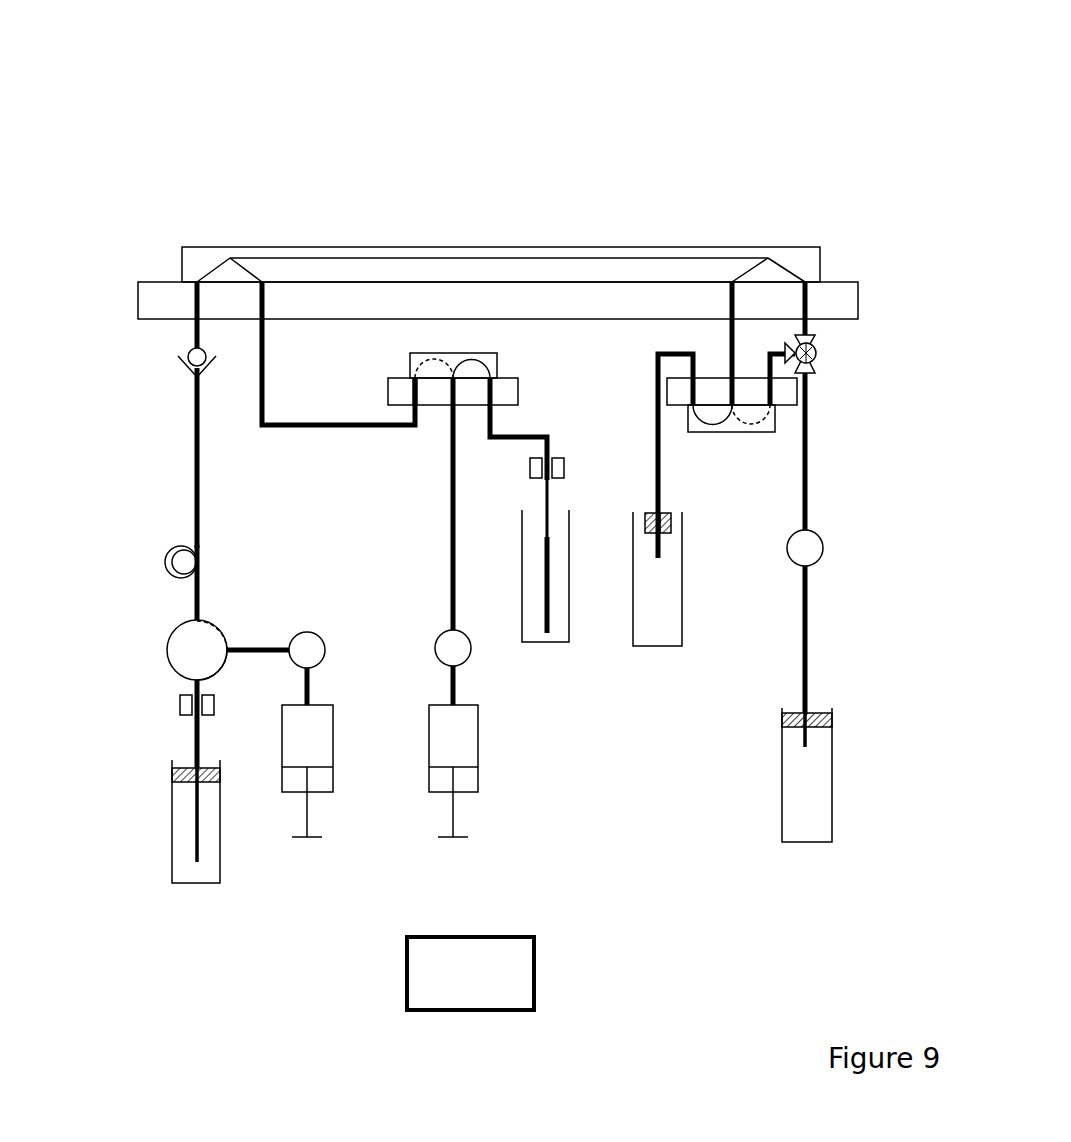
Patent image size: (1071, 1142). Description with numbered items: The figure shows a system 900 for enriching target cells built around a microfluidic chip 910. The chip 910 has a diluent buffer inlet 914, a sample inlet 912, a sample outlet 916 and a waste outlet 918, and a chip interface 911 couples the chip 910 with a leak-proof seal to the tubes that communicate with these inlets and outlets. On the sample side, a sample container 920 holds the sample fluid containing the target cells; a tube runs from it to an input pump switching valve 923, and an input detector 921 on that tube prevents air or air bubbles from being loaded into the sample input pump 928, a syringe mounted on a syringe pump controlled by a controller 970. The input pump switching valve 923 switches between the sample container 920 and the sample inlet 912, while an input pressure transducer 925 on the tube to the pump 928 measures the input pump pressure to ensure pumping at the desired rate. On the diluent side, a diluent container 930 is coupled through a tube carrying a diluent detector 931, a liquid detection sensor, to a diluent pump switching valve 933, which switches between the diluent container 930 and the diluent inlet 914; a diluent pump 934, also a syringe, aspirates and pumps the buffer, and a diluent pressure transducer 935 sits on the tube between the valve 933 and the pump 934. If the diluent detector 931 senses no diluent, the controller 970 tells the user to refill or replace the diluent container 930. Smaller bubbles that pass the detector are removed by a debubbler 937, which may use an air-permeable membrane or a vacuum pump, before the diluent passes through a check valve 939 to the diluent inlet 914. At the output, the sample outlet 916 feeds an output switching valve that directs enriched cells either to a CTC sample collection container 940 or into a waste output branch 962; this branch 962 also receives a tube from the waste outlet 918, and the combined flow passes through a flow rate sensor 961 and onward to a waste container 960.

The system 900 is at (284, 100).
The microfluidic chip 910 is at (538, 247).
The chip interface 911 is at (157, 298).
The sample inlet 912 is at (262, 282).
The diluent buffer inlet 914 is at (197, 282).
The sample outlet 916 is at (732, 282).
The waste outlet 918 is at (805, 282).
The sample container 920 is at (569, 642).
The input detector 921 is at (562, 465).
The input pump switching valve 923 is at (510, 393).
The input pressure transducer 925 is at (478, 663).
The sample input pump 928 is at (485, 800).
The diluent container 930 is at (180, 868).
The diluent detector 931 is at (138, 727).
The diluent pump switching valve 933 is at (173, 628).
The diluent pump 934 is at (335, 815).
The diluent pressure transducer 935 is at (330, 633).
The debubbler 937 is at (163, 547).
The check valve 939 is at (175, 378).
The CTC sample collection container 940 is at (733, 483).
The waste container 960 is at (822, 822).
The flow rate sensor 961 is at (823, 555).
The waste output branch 962 is at (810, 482).
The controller 970 is at (443, 1010).